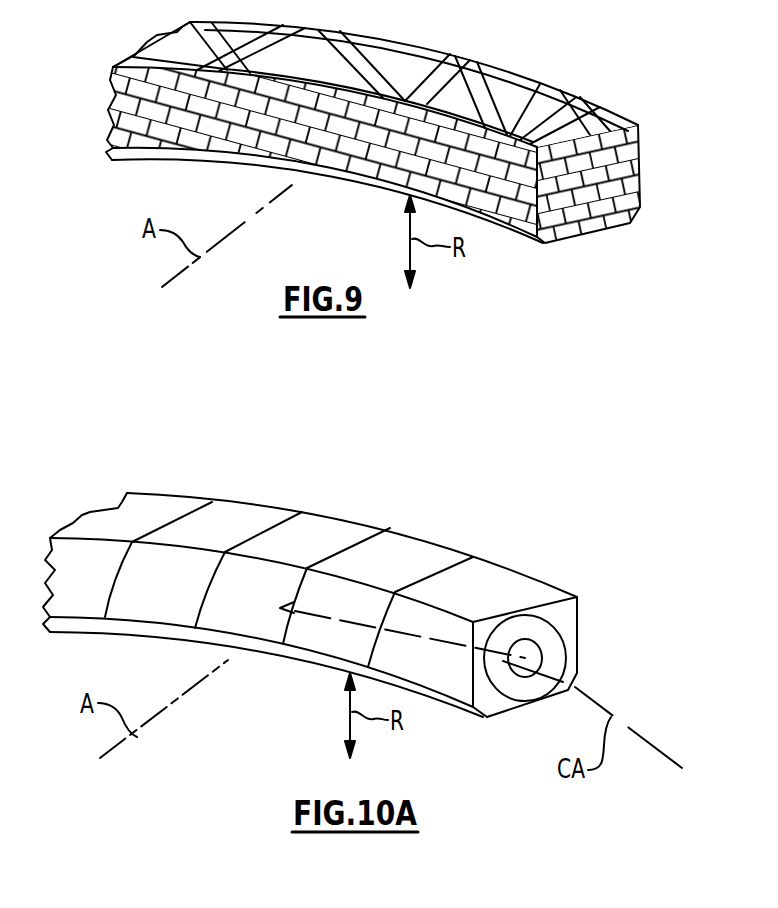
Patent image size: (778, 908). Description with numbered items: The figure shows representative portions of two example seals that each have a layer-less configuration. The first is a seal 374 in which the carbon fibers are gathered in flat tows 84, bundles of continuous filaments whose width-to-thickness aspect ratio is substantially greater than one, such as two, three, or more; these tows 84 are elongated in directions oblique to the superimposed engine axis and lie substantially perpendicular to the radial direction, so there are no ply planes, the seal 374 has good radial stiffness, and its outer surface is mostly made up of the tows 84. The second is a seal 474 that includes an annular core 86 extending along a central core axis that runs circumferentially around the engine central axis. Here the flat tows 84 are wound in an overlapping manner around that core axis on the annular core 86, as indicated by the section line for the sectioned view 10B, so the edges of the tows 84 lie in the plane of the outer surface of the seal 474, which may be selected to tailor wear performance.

In FIG. 9, the seal 374 is at (388, 126).
In FIG. 9, the flat tows 84 is at (578, 128).
In FIG. 10A, the flat tows 84 is at (478, 572).
In FIG. 10A, the seal 474 is at (343, 581).
In FIG. 10A, the annular core 86 is at (543, 660).
In FIG. 10A, the sectioned view 10B is at (305, 603).